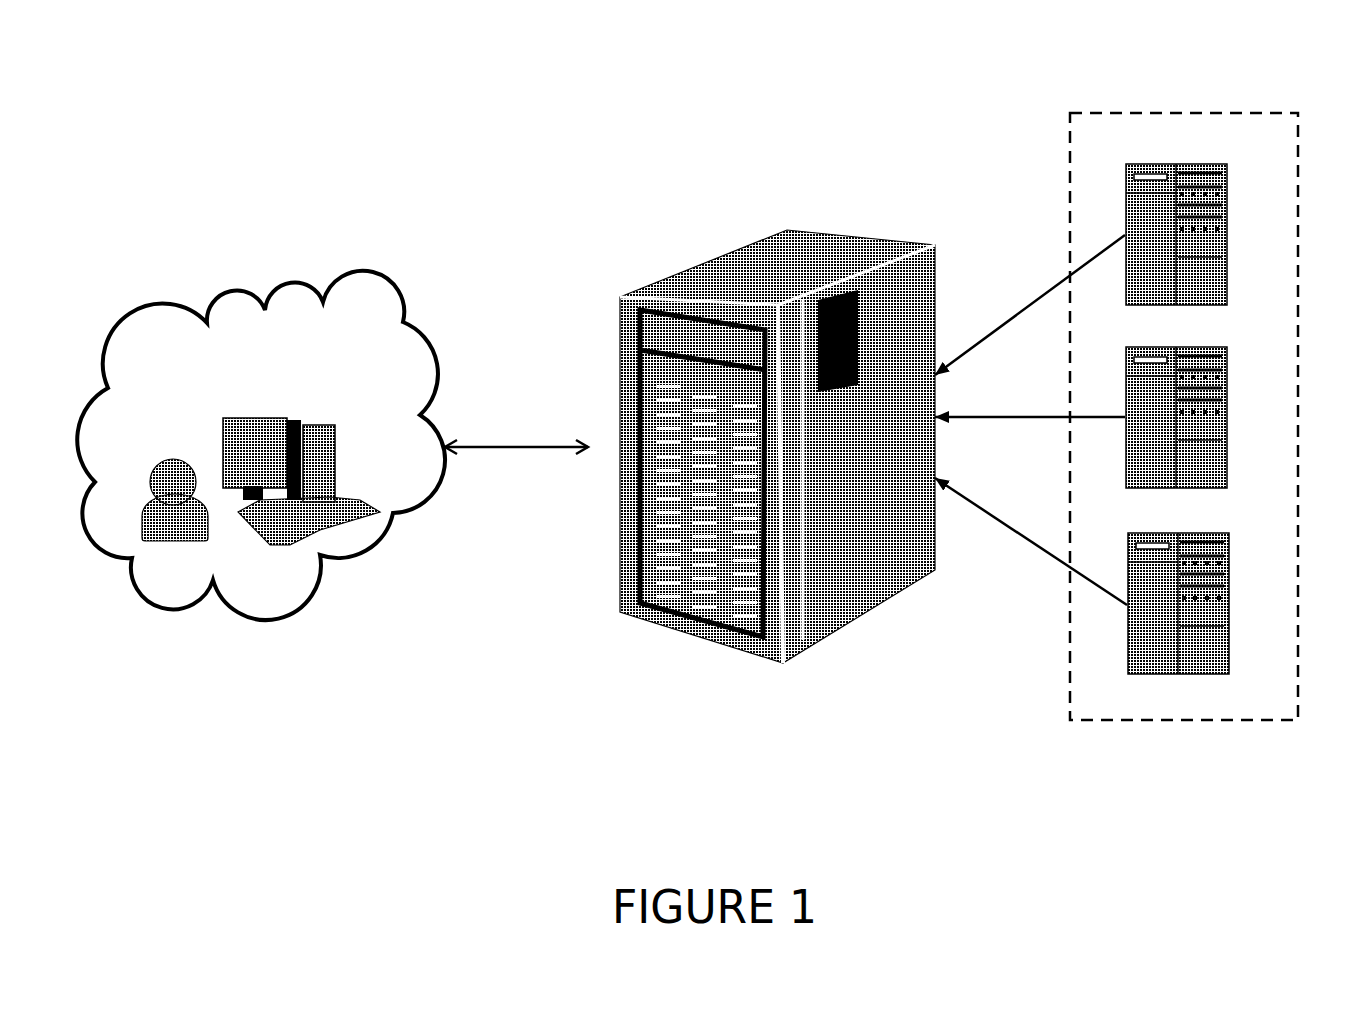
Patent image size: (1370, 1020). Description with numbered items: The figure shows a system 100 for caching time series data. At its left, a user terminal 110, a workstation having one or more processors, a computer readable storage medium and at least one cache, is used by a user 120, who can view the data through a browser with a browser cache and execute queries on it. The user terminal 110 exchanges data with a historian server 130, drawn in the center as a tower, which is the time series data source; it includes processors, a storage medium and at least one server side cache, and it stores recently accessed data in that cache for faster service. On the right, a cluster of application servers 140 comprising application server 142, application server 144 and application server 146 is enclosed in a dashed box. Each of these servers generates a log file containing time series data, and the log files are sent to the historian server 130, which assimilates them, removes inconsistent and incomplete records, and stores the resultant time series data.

The system 100 is at (1360, 43).
The user terminal 110 is at (300, 400).
The user 120 is at (173, 458).
The historian server 130 is at (765, 215).
The cluster of application servers 140 is at (1185, 112).
The application server 142 is at (1183, 163).
The application server 144 is at (1182, 533).
The application server 146 is at (1177, 347).